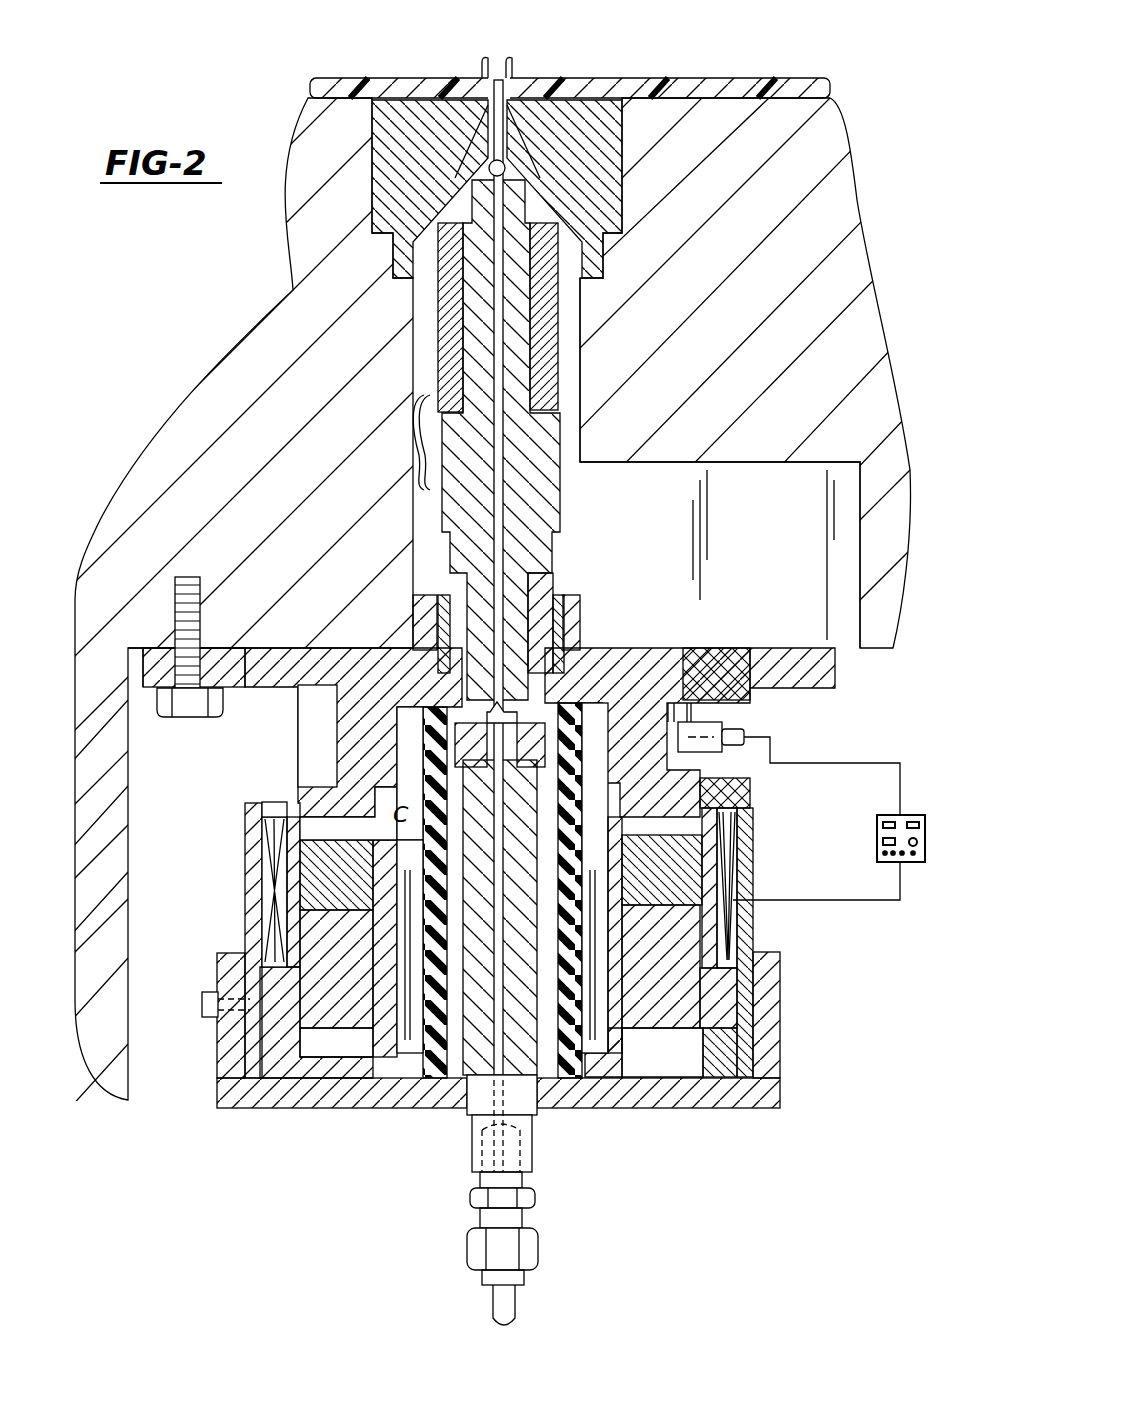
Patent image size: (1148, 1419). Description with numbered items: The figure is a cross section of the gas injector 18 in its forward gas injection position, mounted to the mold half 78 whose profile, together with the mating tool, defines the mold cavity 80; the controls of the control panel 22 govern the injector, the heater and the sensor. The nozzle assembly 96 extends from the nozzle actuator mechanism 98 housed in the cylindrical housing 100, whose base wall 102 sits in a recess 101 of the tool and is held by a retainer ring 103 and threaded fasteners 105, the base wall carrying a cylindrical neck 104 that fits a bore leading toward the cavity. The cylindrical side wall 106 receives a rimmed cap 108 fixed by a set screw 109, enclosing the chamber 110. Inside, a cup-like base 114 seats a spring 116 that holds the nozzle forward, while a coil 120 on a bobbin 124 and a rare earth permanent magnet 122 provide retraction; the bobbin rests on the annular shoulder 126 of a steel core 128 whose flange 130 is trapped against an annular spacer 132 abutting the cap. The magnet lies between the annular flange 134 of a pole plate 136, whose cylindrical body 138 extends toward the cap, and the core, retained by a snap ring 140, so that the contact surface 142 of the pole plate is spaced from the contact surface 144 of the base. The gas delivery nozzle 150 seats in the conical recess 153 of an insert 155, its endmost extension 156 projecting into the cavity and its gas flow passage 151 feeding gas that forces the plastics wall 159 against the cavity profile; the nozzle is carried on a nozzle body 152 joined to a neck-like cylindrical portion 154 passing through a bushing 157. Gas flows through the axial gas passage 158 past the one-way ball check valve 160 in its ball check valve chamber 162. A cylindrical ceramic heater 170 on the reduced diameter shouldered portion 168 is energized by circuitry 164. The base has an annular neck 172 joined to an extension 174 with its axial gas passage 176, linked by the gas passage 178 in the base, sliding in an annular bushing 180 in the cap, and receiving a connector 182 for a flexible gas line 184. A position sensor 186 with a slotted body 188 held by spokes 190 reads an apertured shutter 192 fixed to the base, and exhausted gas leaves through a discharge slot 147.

The gas injector 18 is at (680, 575).
The control panel 22 is at (920, 868).
The mold half 78 is at (238, 395).
The mold cavity 80 is at (362, 32).
The nozzle assembly 96 is at (565, 440).
The nozzle actuator mechanism 98 is at (262, 925).
The housing 100 is at (265, 750).
The recess 101 is at (140, 705).
The base wall 102 is at (640, 626).
The retainer ring 103 is at (145, 650).
The cylindrical neck 104 is at (438, 600).
The threaded fasteners 105 is at (178, 580).
The cylindrical side wall 106 is at (242, 900).
The rimmed cap 108 is at (660, 1112).
The set screw 109 is at (202, 1003).
The chamber 110 is at (325, 1050).
The base 114 is at (368, 668).
The spring 116 is at (428, 910).
The coil 120 is at (745, 830).
The rare earth permanent magnet 122 is at (700, 860).
The bobbin 124 is at (700, 885).
The annular shoulder 126 is at (722, 930).
The steel core 128 is at (720, 995).
The flange 130 is at (735, 1013).
The annular spacer 132 is at (758, 1090).
The annular flange 134 is at (725, 805).
The pole plate 136 is at (310, 860).
The cylindrical body 138 is at (636, 960).
The snap ring 140 is at (620, 1032).
The contact surface 142 is at (280, 830).
The contact surface 144 is at (330, 730).
The discharge slot 147 is at (845, 644).
The gas delivery nozzle 150 is at (532, 160).
The gas flow passage 151 is at (505, 152).
The nozzle body 152 is at (420, 438).
The conical recess 153 is at (418, 208).
The neck-like cylindrical portion 154 is at (540, 580).
The insert 155 is at (372, 175).
The endmost extension 156 is at (490, 85).
The bushing 157 is at (564, 603).
The axial gas passage 158 is at (500, 498).
The wall 159 is at (716, 88).
The one-way ball check valve 160 is at (520, 158).
The ball check valve chamber 162 is at (470, 162).
The circuitry 164 is at (430, 478).
The reduced diameter shouldered portion 168 is at (440, 358).
The cylindrical ceramic heater 170 is at (440, 303).
The annular neck 172 is at (555, 715).
The extension 174 is at (527, 805).
The axial gas passage 176 is at (555, 850).
The gas passage 178 is at (497, 712).
The annular bushing 180 is at (530, 1110).
The connector 182 is at (542, 1190).
The flexible gas line 184 is at (498, 1300).
The position sensor 186 is at (742, 720).
The slotted body 188 is at (705, 700).
The spokes 190 is at (720, 660).
The shutter 192 is at (695, 660).